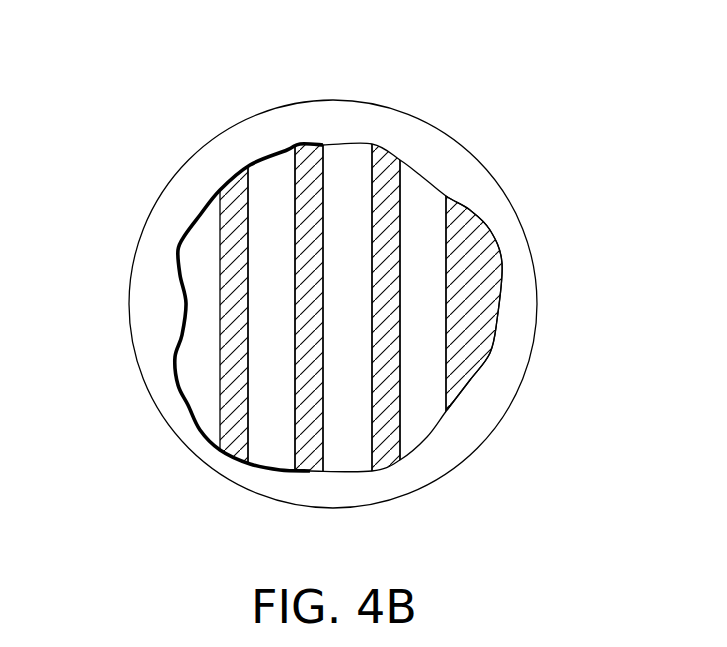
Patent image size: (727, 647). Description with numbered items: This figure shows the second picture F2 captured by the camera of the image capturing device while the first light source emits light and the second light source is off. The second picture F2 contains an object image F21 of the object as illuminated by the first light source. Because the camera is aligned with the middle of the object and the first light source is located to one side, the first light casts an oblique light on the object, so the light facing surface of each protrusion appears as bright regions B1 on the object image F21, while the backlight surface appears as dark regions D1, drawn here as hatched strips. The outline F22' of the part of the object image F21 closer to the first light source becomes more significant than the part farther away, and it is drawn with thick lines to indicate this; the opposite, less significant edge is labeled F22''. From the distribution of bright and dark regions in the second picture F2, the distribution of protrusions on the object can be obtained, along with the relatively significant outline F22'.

The second picture F2 is at (220, 475).
The object image F21 is at (413, 195).
The outline F22' is at (185, 307).
The second edge portion of second fabric layer F22'' is at (520, 303).
The dark regions D1 is at (235, 198).
The bright regions B1 is at (208, 223).